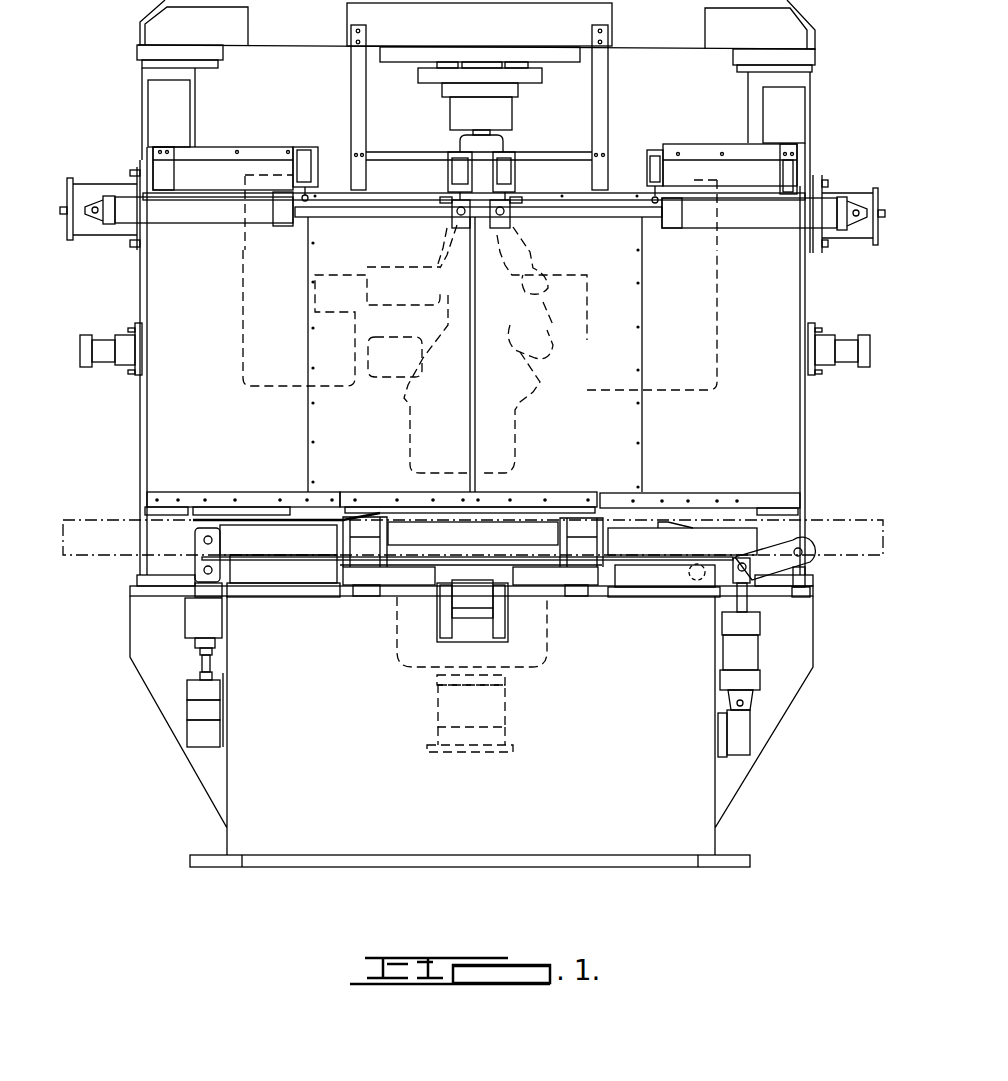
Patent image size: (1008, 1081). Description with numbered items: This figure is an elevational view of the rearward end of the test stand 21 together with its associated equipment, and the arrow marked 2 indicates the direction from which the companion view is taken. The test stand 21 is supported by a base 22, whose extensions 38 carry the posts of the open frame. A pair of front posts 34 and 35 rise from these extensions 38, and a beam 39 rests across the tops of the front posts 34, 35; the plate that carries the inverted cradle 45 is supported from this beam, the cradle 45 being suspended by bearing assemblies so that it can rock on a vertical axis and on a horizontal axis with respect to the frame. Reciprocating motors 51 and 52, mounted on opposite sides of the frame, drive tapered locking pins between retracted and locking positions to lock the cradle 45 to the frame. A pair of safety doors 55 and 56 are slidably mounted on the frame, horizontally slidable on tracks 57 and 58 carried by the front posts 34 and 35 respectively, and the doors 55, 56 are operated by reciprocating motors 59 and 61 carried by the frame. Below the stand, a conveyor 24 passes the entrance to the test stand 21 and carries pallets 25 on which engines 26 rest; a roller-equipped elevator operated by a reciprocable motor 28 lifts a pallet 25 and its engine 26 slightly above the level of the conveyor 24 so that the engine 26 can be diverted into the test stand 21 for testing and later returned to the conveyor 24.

The test stand 21 is at (846, 147).
The base 22 is at (202, 821).
The conveyor 24 is at (863, 550).
The pallet 25 is at (548, 506).
The engine 26 is at (510, 444).
The reciprocable motor 28 is at (500, 727).
The front post 34 is at (140, 430).
The front post 35 is at (807, 477).
The extension 38 is at (158, 670).
The beam 39 is at (690, 38).
The inverted cradle 45 is at (720, 348).
The reciprocating motor 51 is at (102, 338).
The reciprocating motor 52 is at (843, 347).
The safety door 55 is at (385, 463).
The safety door 56 is at (598, 383).
The track 57 is at (250, 498).
The track 58 is at (675, 502).
The reciprocating motor 59 is at (222, 212).
The reciprocating motor 61 is at (733, 215).
The view direction arrow 2 is at (838, 477).